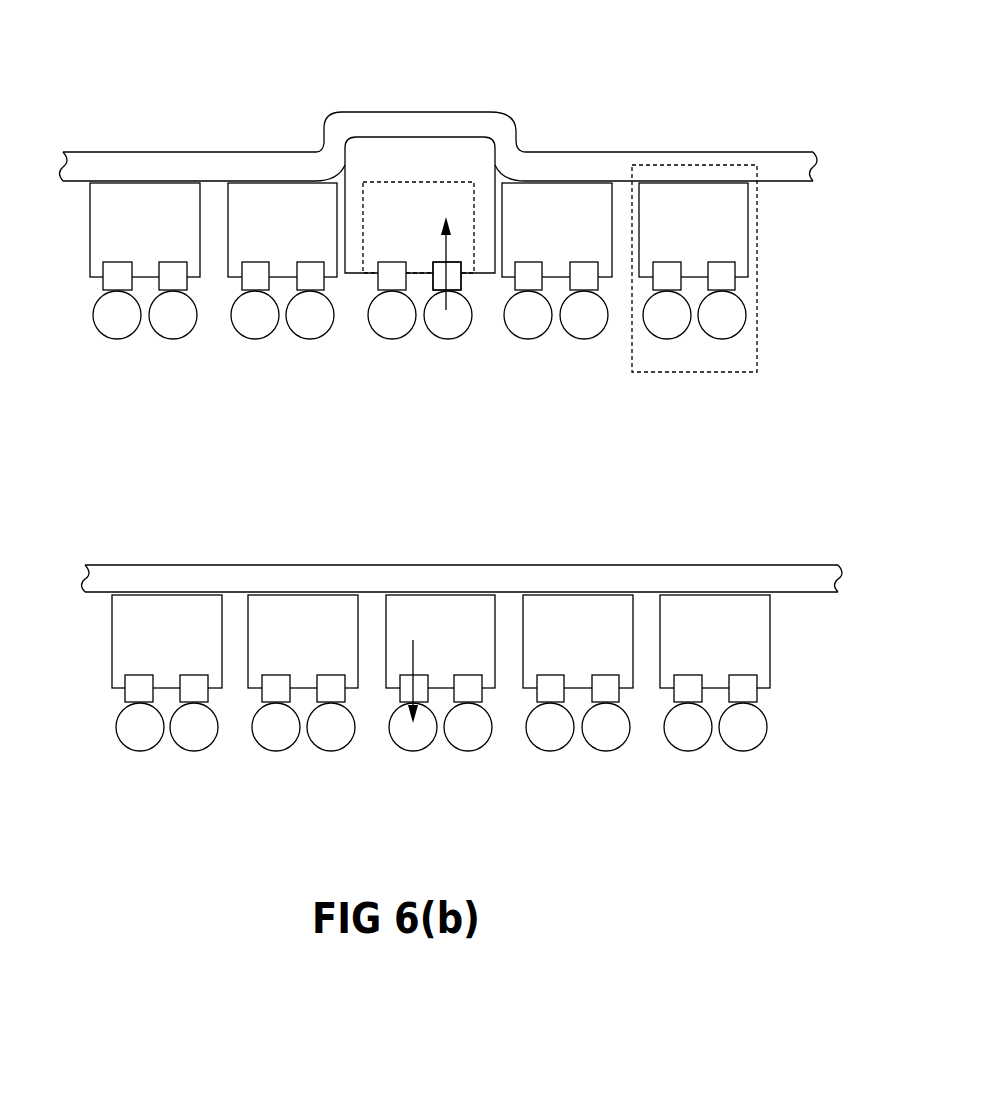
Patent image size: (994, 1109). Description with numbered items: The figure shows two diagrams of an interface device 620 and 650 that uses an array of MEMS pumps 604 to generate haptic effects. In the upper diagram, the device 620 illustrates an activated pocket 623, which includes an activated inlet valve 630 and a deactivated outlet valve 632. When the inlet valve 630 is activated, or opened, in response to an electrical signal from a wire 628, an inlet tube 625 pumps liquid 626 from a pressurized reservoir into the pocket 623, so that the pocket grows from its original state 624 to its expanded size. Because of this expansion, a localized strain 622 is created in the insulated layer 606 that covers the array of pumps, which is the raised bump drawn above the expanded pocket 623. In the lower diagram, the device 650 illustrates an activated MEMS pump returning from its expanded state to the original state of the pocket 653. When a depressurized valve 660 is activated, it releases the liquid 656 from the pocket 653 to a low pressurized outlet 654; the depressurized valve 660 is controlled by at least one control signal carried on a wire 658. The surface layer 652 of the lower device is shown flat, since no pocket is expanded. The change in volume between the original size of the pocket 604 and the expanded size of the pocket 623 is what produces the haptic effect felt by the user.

The interface device 620 is at (163, 44).
The insulated layer 606 is at (248, 167).
The localized strain 622 is at (398, 117).
The activated pocket 623 is at (398, 170).
The original state 624 is at (453, 200).
The MEMS pump 604 is at (707, 224).
The inlet tube 625 is at (445, 325).
The liquid 626 is at (445, 250).
The wire 628 is at (462, 283).
The inlet valve 630 is at (453, 270).
The outlet valve 632 is at (388, 269).
The interface device 650 is at (171, 513).
The circuit board 652 is at (345, 578).
The pocket 653 is at (451, 638).
The low pressurized outlet 654 is at (413, 735).
The liquid 656 is at (412, 660).
The wire 658 is at (399, 693).
The depressurized valve 660 is at (422, 683).